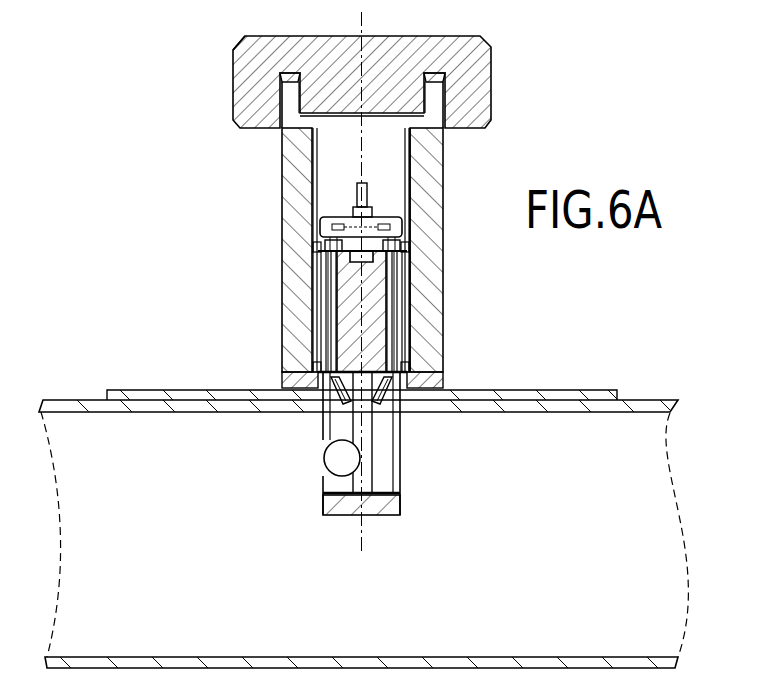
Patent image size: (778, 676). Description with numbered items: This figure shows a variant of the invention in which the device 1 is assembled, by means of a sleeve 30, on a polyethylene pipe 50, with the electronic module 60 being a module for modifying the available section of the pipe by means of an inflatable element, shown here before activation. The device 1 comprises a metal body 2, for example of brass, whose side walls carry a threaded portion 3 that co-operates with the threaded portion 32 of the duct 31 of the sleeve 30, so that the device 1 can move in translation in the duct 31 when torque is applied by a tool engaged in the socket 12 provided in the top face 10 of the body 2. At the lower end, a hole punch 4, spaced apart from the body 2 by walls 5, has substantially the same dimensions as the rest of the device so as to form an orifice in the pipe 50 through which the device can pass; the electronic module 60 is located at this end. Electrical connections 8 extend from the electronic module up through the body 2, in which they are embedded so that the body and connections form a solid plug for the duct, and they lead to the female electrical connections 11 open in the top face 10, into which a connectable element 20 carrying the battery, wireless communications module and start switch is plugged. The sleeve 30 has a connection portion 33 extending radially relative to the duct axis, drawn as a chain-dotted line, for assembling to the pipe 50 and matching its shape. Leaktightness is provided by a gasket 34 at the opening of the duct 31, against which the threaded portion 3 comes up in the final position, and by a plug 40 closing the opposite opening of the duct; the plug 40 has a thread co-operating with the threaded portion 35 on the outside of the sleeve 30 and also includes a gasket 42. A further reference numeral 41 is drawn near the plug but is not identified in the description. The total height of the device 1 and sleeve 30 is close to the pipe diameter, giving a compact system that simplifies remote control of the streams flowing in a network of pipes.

The device 1 is at (345, 190).
The body 2 is at (372, 281).
The threaded portion 3 is at (401, 330).
The hole punch 4 is at (340, 508).
The walls 5 is at (401, 463).
The electronic connections 8 is at (330, 322).
The top face 10 is at (382, 214).
The female electrical connections 11 is at (324, 272).
The socket 12 is at (328, 292).
The connectable element 20 is at (311, 181).
The sleeve 30 is at (445, 158).
The duct 31 is at (383, 125).
The threaded portion 32 is at (412, 165).
The connection portion 33 is at (190, 389).
The gasket 34 is at (316, 247).
The threaded portion 35 is at (264, 71).
The plug 40 is at (497, 90).
The cap slot 41 is at (278, 105).
The gasket 42 is at (287, 72).
The pipe 50 is at (64, 403).
The electronic module 60 is at (340, 458).